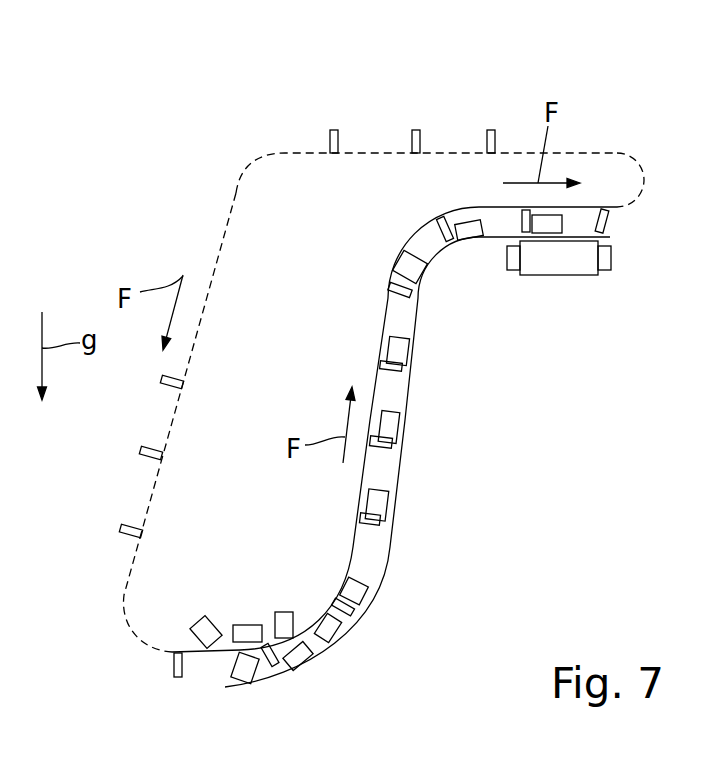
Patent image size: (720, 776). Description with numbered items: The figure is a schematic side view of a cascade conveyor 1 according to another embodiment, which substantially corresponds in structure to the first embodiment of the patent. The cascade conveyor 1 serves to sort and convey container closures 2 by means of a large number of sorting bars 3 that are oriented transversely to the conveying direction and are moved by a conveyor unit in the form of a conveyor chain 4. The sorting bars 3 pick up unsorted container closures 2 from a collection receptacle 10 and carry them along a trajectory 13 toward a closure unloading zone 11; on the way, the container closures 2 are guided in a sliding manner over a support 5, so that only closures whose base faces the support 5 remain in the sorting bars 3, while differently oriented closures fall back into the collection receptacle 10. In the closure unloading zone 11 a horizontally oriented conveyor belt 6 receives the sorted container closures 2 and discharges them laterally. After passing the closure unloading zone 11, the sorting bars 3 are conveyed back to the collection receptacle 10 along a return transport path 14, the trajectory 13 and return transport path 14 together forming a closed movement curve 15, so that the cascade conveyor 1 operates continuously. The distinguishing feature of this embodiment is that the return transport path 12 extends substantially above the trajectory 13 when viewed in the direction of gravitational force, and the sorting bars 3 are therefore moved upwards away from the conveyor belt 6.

The cascade conveyor 1 is at (125, 101).
The container closures 2 is at (398, 352).
The sorting bars 3 is at (335, 130).
The conveyor chain 4 is at (353, 548).
The support 5 is at (391, 552).
The conveyor belt 6 is at (549, 275).
The collection receptacle 10 is at (322, 686).
The closure unloading zone 11 is at (609, 331).
The return transport path 12 is at (461, 484).
The trajectory 13 is at (388, 312).
The return transport path 14 is at (585, 150).
The closed movement curve 15 is at (226, 151).